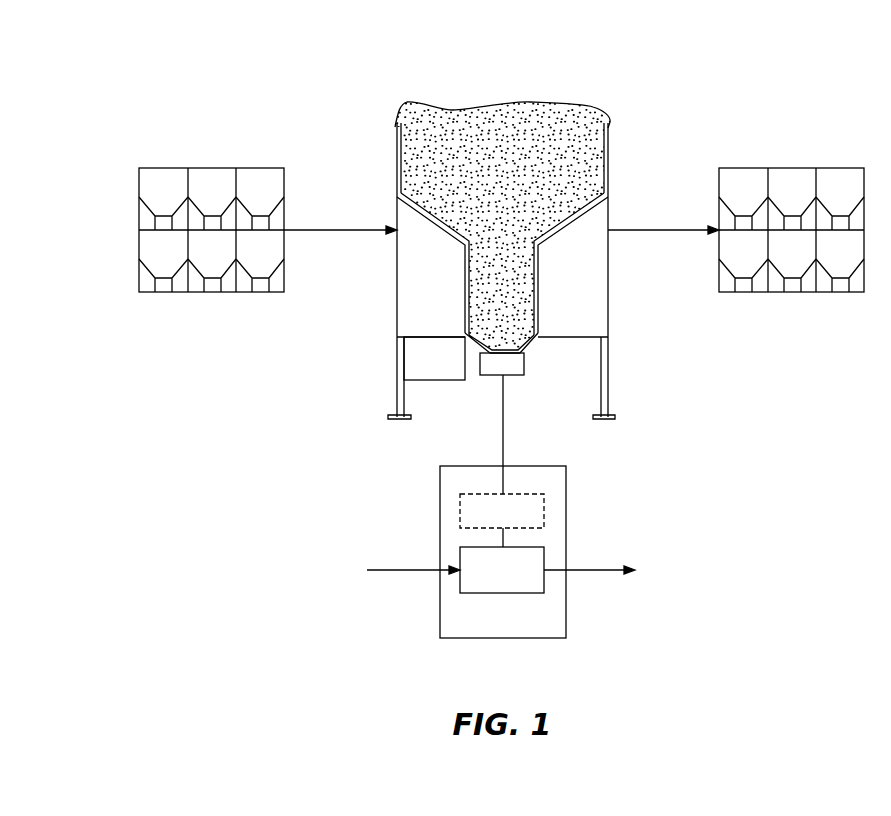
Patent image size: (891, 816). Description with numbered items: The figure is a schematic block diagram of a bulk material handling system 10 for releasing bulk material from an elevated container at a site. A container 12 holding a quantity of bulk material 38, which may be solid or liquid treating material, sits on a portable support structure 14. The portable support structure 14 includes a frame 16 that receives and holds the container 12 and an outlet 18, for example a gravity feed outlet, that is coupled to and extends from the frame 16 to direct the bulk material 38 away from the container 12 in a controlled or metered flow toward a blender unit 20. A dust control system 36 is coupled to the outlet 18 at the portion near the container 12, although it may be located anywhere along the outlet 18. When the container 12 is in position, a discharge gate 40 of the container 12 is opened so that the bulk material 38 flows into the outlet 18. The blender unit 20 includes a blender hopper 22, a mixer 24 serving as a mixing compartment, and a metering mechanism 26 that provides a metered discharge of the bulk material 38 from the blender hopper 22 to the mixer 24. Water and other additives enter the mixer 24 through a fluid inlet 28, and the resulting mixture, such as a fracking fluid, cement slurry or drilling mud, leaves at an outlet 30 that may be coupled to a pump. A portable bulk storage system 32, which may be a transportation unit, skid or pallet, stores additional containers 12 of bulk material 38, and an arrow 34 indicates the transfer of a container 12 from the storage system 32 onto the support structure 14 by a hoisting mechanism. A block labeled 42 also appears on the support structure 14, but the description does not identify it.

The bulk material handling system 10 is at (143, 66).
The container 12 is at (608, 215).
The portable support structure 14 is at (361, 350).
The frame 16 is at (608, 376).
The outlet 18 is at (503, 410).
The blender unit 20 is at (568, 495).
The blender hopper 22 is at (458, 512).
The mixer 24 is at (458, 580).
The metering mechanism 26 is at (503, 543).
The fluid inlet 28 is at (392, 568).
The outlet 30 is at (590, 572).
The portable bulk storage system 32 is at (263, 159).
The arrow 34 is at (328, 227).
The dust control system 36 is at (507, 376).
The bulk material 38 is at (527, 100).
The discharge gate 40 is at (495, 352).
The control unit 42 is at (434, 358).